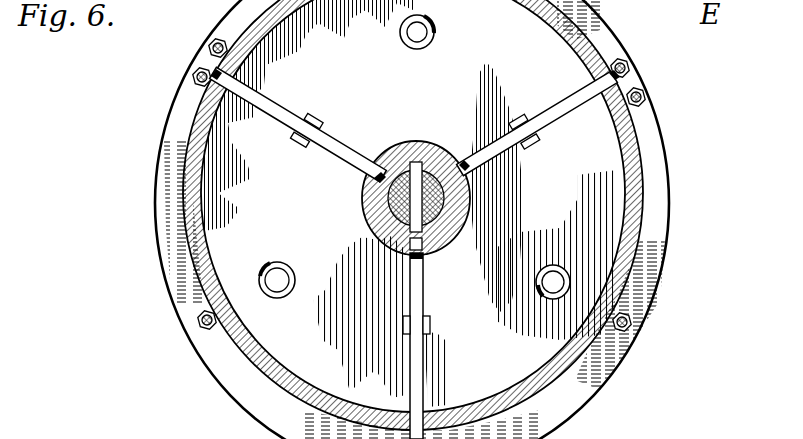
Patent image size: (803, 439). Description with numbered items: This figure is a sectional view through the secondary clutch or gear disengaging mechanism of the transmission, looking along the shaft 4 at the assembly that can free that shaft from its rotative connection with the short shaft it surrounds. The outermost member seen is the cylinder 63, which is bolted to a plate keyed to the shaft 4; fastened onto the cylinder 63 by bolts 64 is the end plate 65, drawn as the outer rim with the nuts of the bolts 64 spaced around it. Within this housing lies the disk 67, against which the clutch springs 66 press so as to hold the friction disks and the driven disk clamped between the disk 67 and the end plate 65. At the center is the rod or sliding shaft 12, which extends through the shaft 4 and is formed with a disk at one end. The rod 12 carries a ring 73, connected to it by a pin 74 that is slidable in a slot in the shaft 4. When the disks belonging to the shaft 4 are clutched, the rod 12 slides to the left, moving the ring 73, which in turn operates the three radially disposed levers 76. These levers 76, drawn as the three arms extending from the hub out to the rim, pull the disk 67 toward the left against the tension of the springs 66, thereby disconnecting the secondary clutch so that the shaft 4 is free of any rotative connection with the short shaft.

The shaft 4 is at (443, 205).
The rod or sliding shaft 12 is at (398, 188).
The cylinder 63 is at (265, 362).
The bolts 64 is at (196, 72).
The end plate 65 is at (669, 190).
The clutch springs 66 is at (433, 38).
The disk 67 is at (465, 234).
The ring 73 is at (432, 152).
The pin 74 is at (412, 226).
The radially disposed levers 76 is at (289, 118).